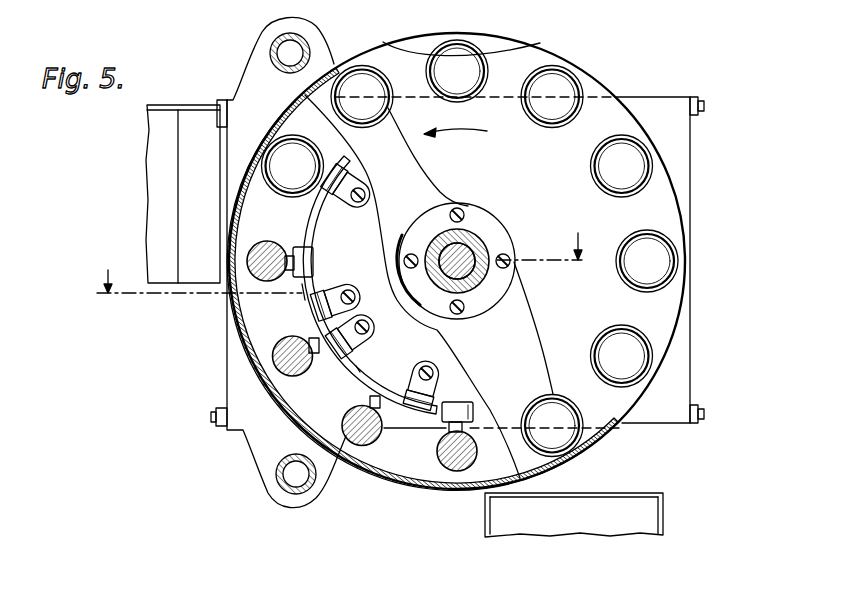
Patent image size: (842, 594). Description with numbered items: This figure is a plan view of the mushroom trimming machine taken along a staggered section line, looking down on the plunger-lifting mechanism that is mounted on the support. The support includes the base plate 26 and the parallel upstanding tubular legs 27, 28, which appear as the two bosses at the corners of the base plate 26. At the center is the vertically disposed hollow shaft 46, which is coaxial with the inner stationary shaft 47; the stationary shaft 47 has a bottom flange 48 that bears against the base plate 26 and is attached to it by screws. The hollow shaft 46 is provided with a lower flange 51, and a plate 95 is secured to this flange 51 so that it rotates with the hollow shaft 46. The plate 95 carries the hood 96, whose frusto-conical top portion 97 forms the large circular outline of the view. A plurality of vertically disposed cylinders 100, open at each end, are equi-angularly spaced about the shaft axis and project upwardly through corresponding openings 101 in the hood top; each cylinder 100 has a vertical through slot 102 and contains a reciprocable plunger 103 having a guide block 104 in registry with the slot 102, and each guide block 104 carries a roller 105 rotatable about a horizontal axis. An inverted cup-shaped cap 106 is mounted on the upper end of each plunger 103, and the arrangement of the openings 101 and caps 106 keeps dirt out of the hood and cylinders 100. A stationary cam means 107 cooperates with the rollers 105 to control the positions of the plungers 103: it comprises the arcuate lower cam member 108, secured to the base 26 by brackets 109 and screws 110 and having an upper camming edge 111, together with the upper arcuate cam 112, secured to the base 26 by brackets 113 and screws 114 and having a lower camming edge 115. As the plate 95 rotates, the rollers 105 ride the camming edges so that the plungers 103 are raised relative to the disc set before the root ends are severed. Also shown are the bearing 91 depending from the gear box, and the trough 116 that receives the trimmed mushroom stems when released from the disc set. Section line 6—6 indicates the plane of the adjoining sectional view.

The base plate 26 is at (683, 390).
The tubular leg 27 is at (271, 46).
The tubular leg 28 is at (277, 477).
The hollow shaft 46 is at (471, 252).
The stationary shaft 47 is at (470, 243).
The bottom flange 48 is at (383, 256).
The lower flange 51 is at (425, 222).
The bearing 91 is at (155, 158).
The plate 95 is at (529, 334).
The hood 96 is at (604, 87).
The frusto conical top portion 97 is at (240, 342).
The cylinder 100 is at (362, 361).
The opening 101 is at (374, 66).
The slot 102 is at (438, 447).
The plunger 103 is at (269, 242).
The guide block 104 is at (475, 420).
The roller 105 is at (314, 256).
The cap 106 is at (470, 241).
The stationary cam means 107 is at (318, 290).
The lower cam member 108 is at (344, 285).
The bracket 109 is at (368, 179).
The screw 110 is at (371, 190).
The upper camming edge 111 is at (298, 296).
The upper arcuate cam 112 is at (359, 370).
The bracket 113 is at (418, 364).
The screw 114 is at (372, 336).
The lower camming edge 115 is at (376, 324).
The trough 116 is at (660, 518).
The section line 6- 6 is at (343, 263).